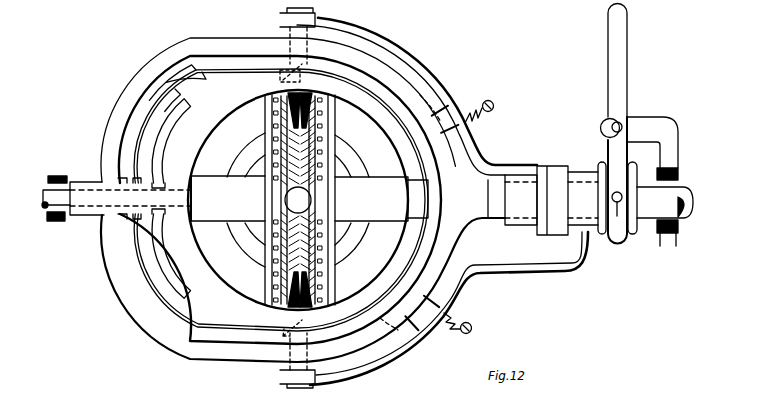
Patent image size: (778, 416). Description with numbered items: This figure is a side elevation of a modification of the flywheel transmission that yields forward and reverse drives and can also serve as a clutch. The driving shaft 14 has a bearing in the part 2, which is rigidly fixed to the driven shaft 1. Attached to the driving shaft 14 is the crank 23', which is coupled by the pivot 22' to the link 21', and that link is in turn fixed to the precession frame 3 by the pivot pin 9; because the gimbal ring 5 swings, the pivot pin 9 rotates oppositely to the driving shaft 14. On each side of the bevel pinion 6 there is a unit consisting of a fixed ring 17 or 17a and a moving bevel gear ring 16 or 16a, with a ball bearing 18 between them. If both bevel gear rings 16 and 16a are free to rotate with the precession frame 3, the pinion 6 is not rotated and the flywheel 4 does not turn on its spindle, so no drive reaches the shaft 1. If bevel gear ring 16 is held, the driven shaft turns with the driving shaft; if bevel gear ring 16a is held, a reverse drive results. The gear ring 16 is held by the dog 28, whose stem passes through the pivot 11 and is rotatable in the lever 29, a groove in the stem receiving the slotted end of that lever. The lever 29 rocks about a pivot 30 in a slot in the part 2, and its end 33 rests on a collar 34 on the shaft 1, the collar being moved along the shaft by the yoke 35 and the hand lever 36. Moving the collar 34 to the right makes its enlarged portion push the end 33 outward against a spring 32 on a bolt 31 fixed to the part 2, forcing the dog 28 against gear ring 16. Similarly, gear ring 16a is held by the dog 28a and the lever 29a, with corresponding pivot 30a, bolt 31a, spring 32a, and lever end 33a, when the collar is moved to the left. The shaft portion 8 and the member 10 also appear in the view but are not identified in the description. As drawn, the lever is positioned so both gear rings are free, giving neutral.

The shaft 1 is at (652, 234).
The part 2 is at (447, 269).
The precession frame 3 is at (228, 198).
The flywheel 4 is at (356, 163).
The gimbal ring 5 is at (212, 287).
The pinion 6 is at (298, 200).
The shaft 8 is at (392, 221).
The pivot pin 9 is at (193, 174).
The plug 10 is at (285, 46).
The pivot 11 is at (290, 340).
The driving shaft 14 is at (55, 195).
The bevel gear ring 16 is at (312, 262).
The bevel gear ring 16a is at (290, 268).
The fixed ring 17 is at (330, 104).
The fixed ring 17a is at (266, 118).
The ball bearing 18 is at (264, 150).
The link 21' is at (170, 199).
The pivot 22' is at (187, 88).
The crank 23' is at (275, 200).
The dog 28 is at (290, 388).
The dog 28a is at (300, 70).
The lever 29 is at (365, 364).
The lever 29a is at (436, 70).
The pivot 30 is at (396, 343).
The band segment 30a is at (452, 102).
The bolt 31 is at (472, 327).
The screw 31a is at (494, 108).
The spring 32 is at (452, 315).
The spring 32a is at (484, 104).
The end 33 is at (586, 246).
The coupling 33a is at (537, 166).
The collar 34 is at (555, 165).
The yoke 35 is at (617, 218).
The hand lever 36 is at (622, 114).